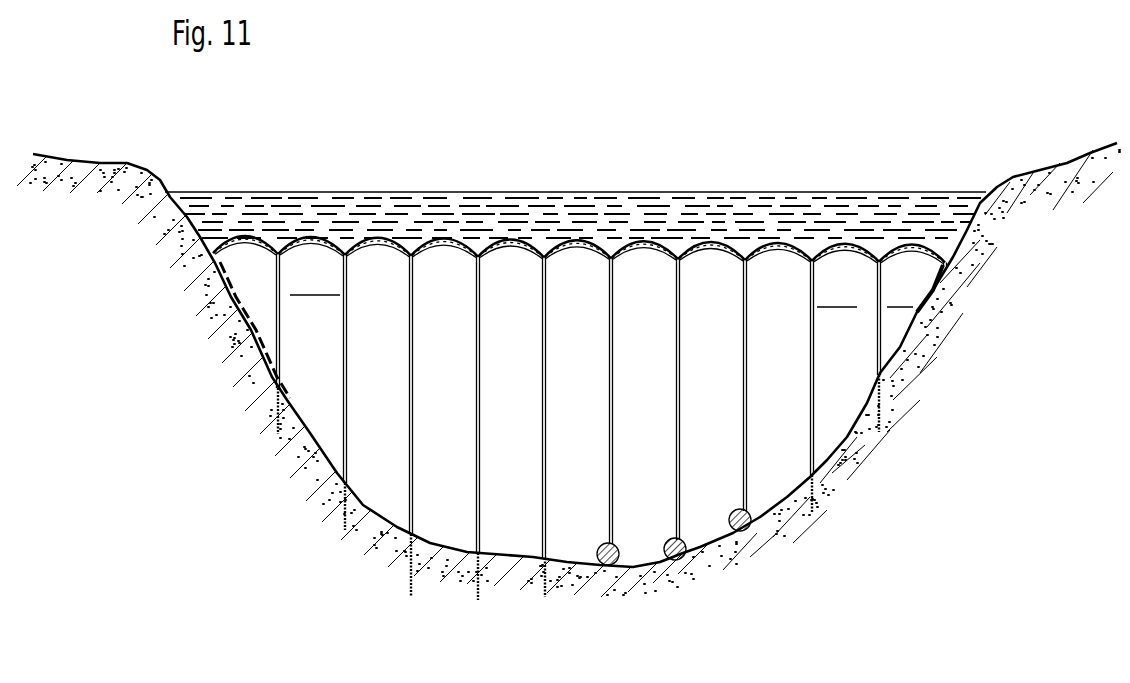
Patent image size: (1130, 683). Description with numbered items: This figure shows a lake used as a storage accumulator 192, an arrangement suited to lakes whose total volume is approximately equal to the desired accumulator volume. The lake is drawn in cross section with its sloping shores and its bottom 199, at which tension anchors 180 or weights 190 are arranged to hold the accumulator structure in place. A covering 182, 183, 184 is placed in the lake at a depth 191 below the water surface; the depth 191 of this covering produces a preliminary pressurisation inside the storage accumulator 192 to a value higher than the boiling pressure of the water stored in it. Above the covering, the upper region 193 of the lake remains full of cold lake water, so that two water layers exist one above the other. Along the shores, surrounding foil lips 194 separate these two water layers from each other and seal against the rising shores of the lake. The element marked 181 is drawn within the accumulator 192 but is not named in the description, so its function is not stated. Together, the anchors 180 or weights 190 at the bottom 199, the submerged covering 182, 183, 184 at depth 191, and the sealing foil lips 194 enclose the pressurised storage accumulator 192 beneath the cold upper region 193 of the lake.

The tension anchor 180 is at (498, 586).
The partition wall 181 is at (410, 408).
The covering 182 is at (855, 253).
The covering 183 is at (683, 264).
The covering 184 is at (766, 253).
The weight 190 is at (640, 534).
The depth 191 is at (715, 240).
The storage accumulator 192 is at (580, 433).
The upper region 193 is at (470, 207).
The surrounding foil lip 194 is at (232, 282).
The bottom 199 is at (248, 455).